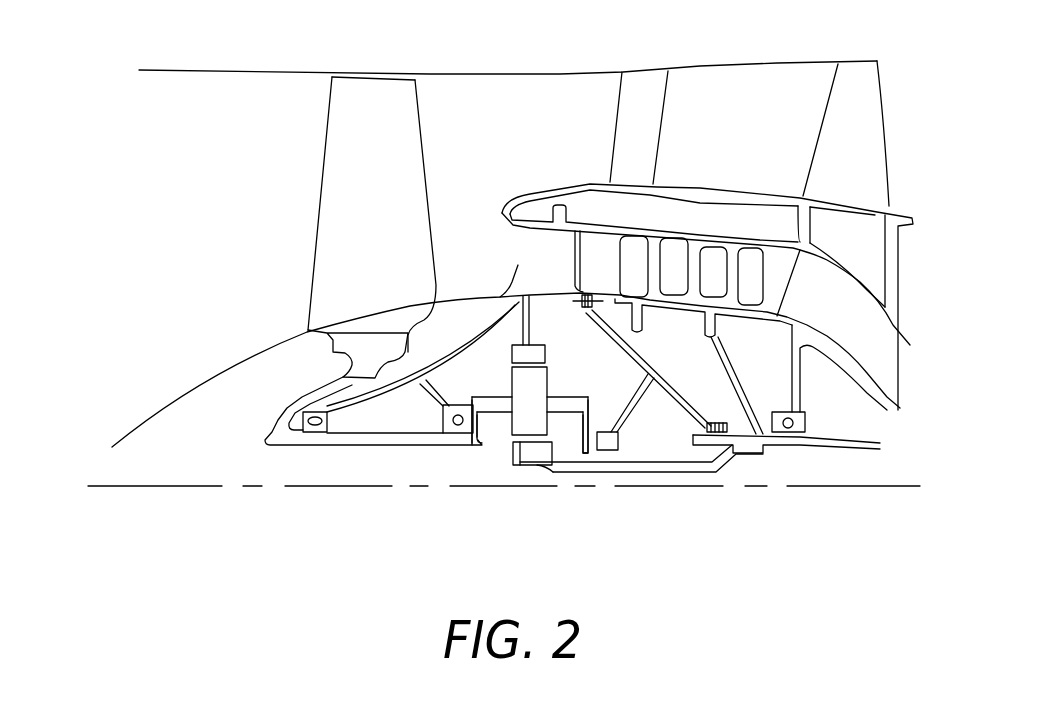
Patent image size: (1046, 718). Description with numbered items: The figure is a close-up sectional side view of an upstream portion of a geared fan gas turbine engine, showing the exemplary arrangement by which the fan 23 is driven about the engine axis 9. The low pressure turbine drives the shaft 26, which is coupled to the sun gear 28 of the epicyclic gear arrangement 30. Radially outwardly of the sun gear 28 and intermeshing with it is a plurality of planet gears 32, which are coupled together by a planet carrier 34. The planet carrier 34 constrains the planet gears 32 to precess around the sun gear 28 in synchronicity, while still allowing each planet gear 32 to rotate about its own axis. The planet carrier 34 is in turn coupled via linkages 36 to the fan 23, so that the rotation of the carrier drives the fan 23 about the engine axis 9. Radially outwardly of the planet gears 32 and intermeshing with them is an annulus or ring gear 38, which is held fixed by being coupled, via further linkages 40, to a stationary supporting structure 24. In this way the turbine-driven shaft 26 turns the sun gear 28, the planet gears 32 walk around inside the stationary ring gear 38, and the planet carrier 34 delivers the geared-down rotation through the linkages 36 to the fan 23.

The engine axis 9 is at (203, 486).
The fan 23 is at (347, 203).
The stationary supporting structure 24 is at (527, 230).
The shaft 26 is at (653, 468).
The sun gear 28 is at (528, 453).
The epicyclic gear arrangement 30 is at (502, 432).
The planet gears 32 is at (520, 425).
The planet carrier 34 is at (572, 437).
The linkages 36 is at (487, 437).
The ring gear 38 is at (546, 355).
The linkages 40 is at (533, 326).